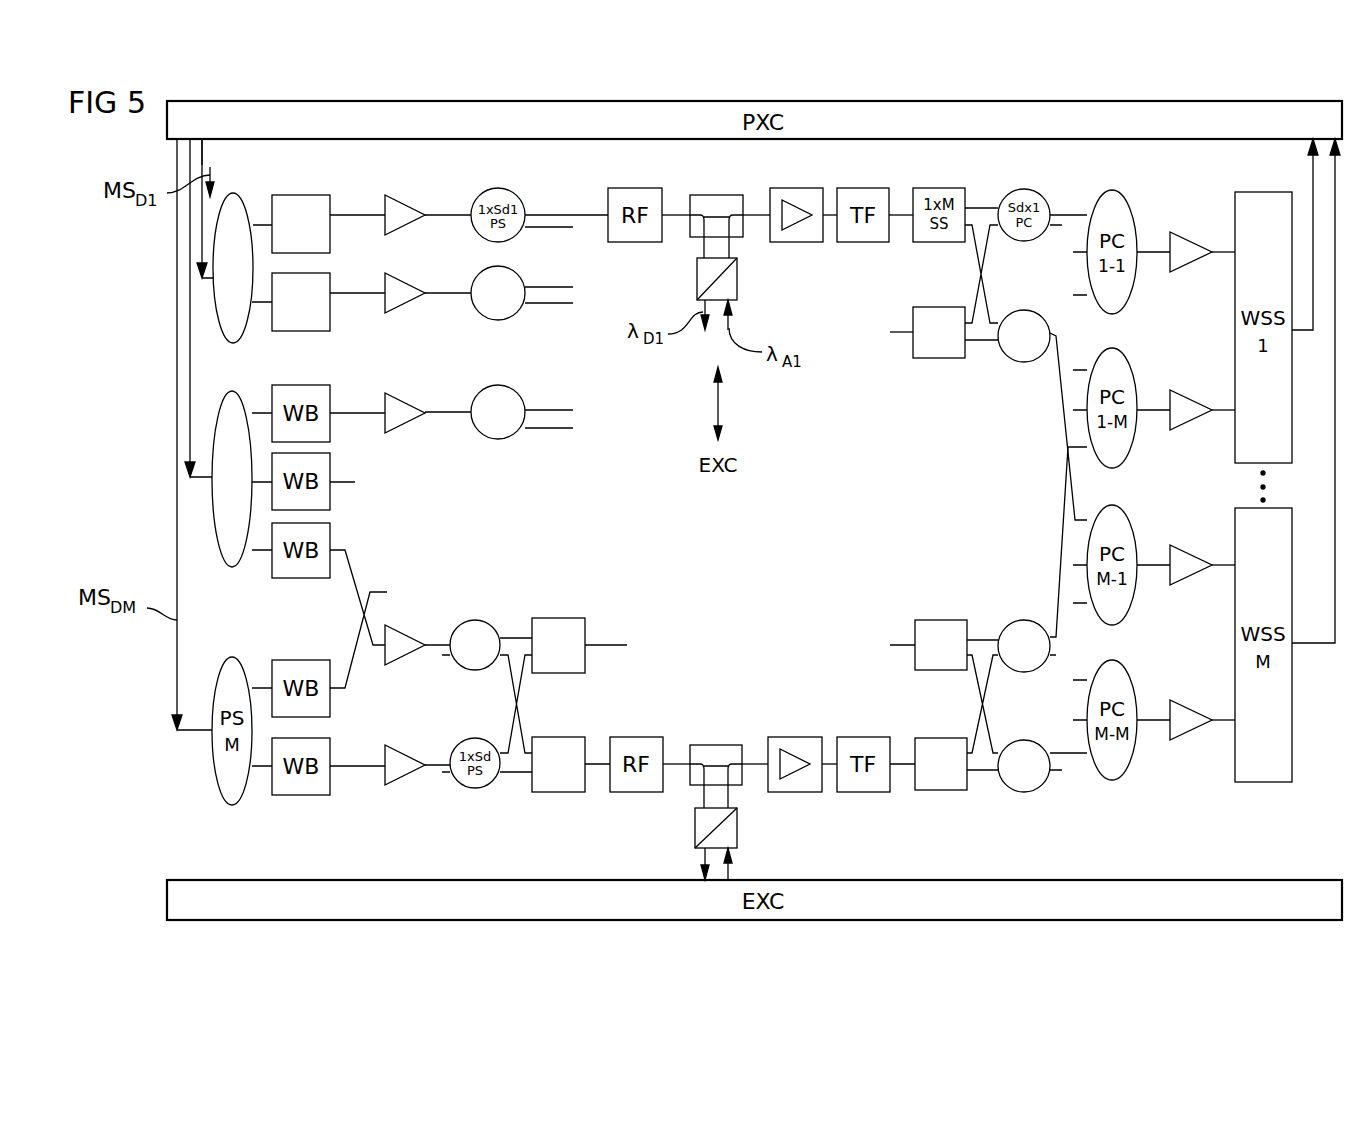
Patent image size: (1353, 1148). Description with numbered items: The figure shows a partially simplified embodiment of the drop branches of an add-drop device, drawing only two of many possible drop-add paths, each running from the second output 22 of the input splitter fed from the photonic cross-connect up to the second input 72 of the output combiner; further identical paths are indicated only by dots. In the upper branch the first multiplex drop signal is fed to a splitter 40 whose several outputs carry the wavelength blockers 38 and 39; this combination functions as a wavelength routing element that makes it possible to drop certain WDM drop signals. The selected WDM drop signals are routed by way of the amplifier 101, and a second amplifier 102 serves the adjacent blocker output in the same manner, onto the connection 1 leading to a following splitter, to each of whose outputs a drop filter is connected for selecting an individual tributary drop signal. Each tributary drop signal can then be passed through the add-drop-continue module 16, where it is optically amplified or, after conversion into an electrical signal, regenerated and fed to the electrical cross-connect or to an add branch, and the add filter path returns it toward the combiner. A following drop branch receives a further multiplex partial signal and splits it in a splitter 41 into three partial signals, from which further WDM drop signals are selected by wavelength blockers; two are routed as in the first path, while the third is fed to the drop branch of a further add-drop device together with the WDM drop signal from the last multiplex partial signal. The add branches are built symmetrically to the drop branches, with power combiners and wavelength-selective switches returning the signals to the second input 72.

The optical fiber link 1 is at (448, 202).
The second output of the splitter 22 is at (203, 141).
The amplifier 101 is at (437, 182).
The amplifier 102 is at (437, 262).
The wavelength blocker 38 is at (332, 228).
The wavelength blocker 39 is at (332, 308).
The splitter 40 is at (250, 320).
The splitter 41 is at (233, 567).
The add-drop-continue module 16 is at (740, 238).
The second input of the combiner 72 is at (1308, 143).